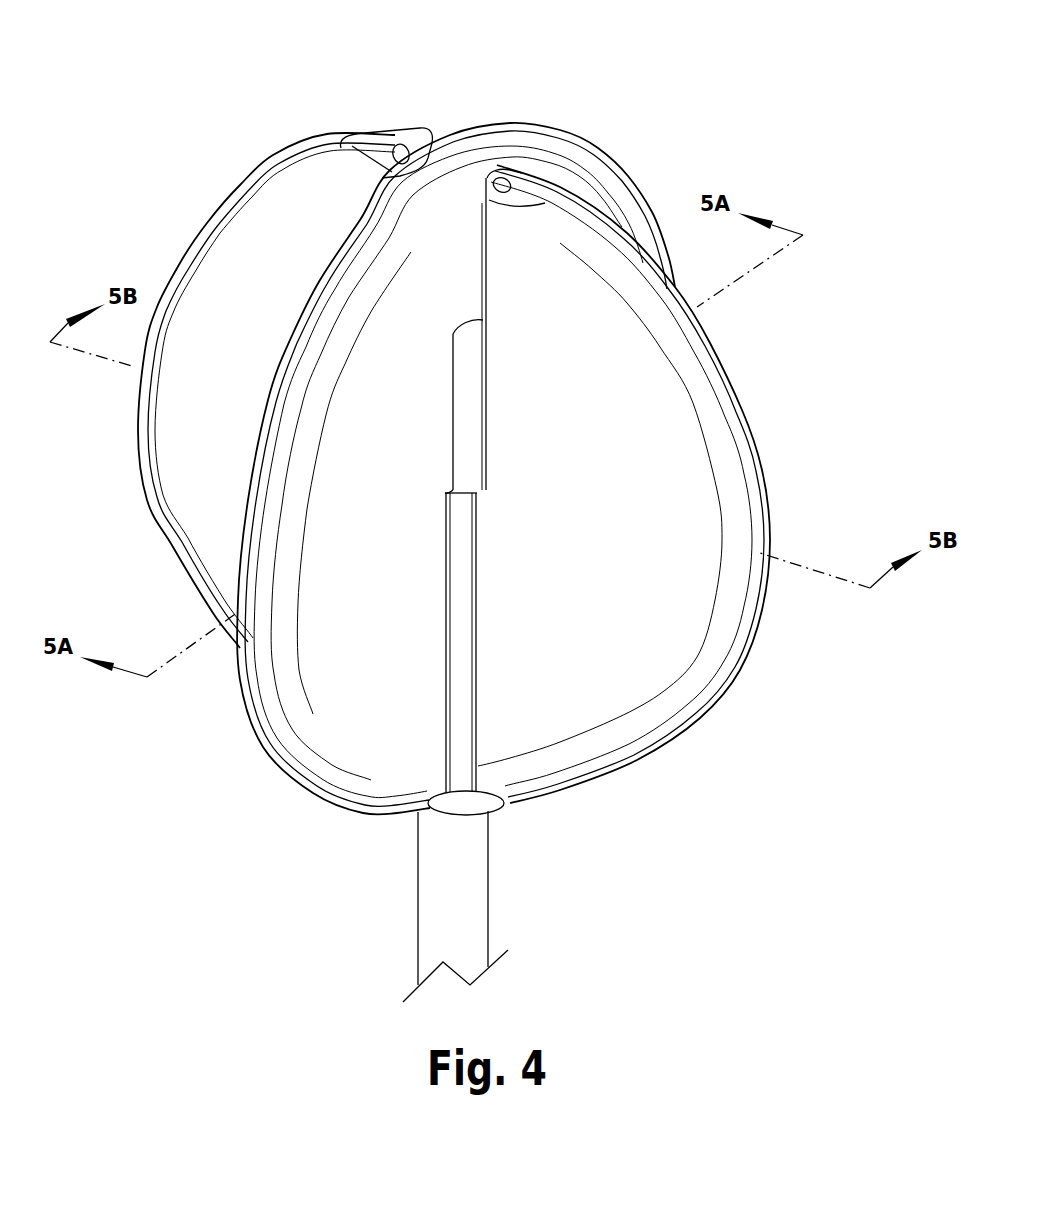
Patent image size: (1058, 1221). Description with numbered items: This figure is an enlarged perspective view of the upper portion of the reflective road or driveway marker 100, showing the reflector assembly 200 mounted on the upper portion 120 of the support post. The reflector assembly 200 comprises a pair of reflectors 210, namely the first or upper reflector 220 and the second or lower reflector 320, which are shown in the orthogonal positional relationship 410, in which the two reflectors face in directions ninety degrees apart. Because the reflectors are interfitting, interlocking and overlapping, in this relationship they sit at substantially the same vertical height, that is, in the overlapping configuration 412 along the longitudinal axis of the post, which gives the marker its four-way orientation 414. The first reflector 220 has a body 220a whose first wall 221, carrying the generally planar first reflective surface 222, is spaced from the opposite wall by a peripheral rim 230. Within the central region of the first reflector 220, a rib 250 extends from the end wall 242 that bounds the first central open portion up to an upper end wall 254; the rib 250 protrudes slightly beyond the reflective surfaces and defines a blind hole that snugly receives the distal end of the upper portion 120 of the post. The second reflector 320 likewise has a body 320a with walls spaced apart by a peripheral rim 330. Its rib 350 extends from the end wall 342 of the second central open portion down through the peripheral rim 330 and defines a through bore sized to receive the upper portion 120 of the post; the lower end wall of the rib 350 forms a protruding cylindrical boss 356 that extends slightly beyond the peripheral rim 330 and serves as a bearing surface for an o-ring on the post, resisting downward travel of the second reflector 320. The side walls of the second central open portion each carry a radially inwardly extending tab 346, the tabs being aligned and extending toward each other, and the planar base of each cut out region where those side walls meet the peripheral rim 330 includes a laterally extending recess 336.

The reflective road or driveway marker 100 is at (880, 215).
The upper portion of the support post 120 is at (458, 897).
The reflector assembly 200 is at (838, 305).
The pair of reflectors 210 is at (858, 345).
The first reflector 220 is at (598, 183).
The body of the first reflector 220a is at (323, 677).
The first wall 221 is at (385, 770).
The first reflective surface 222 is at (355, 743).
The peripheral rim of the first reflector 230 is at (277, 760).
The end wall of the first central open portion 242 is at (453, 491).
The rib of the first reflector 250 is at (465, 405).
The upper end wall of the rib 254 is at (470, 330).
The second reflector 320 is at (197, 463).
The body of the second reflector 320a is at (197, 412).
The peripheral rim of the second reflector 330 is at (732, 488).
The laterally extending recess 336 is at (400, 152).
The end wall of the second central open portion 342 is at (462, 508).
The radially inwardly extending tab 346 is at (482, 318).
The rib of the second reflector 350 is at (462, 628).
The cylindrical boss 356 is at (500, 805).
The orthogonal positional relationship 410 is at (145, 120).
The overlapping configuration 412 is at (195, 95).
The four-way orientation 414 is at (242, 75).